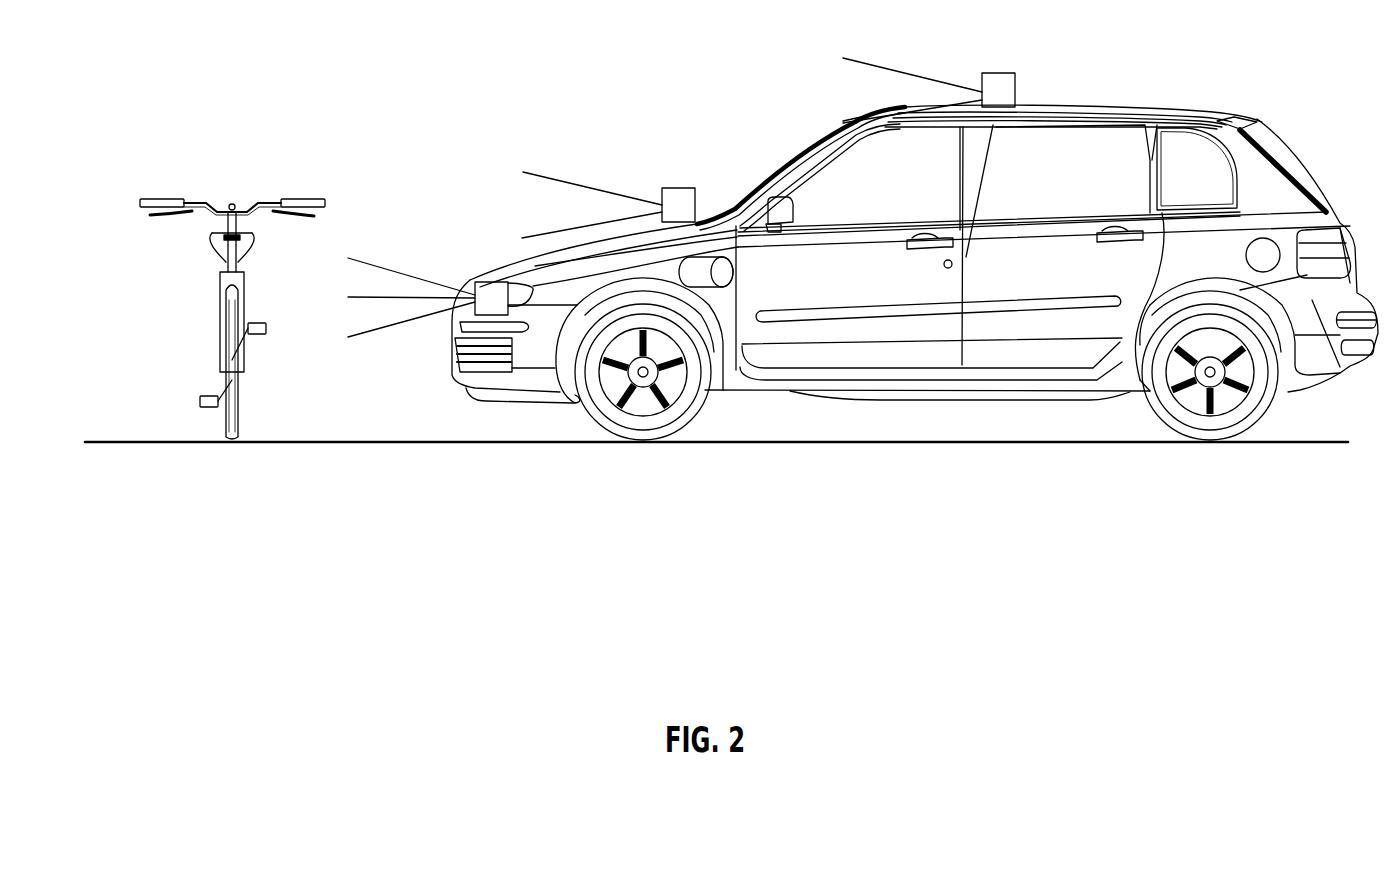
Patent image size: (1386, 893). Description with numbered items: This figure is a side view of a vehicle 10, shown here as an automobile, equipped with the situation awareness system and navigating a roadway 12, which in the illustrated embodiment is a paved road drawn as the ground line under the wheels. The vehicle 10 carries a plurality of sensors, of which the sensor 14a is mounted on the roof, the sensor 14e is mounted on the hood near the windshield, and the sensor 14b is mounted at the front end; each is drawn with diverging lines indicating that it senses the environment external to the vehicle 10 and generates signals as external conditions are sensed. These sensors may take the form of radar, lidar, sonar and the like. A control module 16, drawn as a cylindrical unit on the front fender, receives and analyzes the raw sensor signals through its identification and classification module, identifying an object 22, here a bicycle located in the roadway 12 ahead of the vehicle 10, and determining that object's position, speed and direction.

The vehicle 10 is at (1283, 143).
The roadway 12 is at (1297, 443).
The sensor 14a is at (1002, 73).
The sensor 14b is at (490, 282).
The sensor 14e is at (680, 188).
The control module 16 is at (733, 272).
The object 22 is at (166, 199).